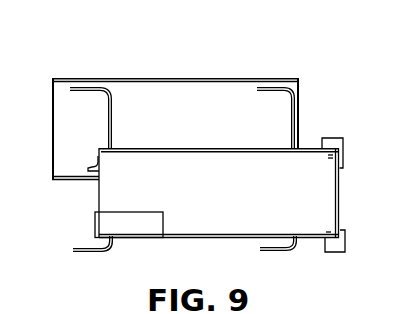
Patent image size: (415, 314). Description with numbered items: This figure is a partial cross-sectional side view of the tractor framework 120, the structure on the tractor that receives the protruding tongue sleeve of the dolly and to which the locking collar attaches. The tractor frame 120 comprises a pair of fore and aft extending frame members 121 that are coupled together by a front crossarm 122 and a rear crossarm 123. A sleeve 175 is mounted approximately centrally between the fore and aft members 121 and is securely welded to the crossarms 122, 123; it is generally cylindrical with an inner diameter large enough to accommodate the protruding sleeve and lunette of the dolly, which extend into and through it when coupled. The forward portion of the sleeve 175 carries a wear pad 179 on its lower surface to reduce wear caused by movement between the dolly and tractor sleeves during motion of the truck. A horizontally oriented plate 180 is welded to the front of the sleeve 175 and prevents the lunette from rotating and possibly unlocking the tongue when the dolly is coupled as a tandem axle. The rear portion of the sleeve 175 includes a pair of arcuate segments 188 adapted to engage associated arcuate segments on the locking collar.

The tractor framework 120 is at (189, 72).
The fore and aft extending frame members 121 is at (90, 76).
The front crossarm 122 is at (113, 112).
The rear crossarm 123 is at (297, 108).
The sleeve 175 is at (215, 147).
The wear pad 179 is at (165, 218).
The horizontally oriented plate 180 is at (78, 183).
The arcuate segments 188 is at (343, 140).